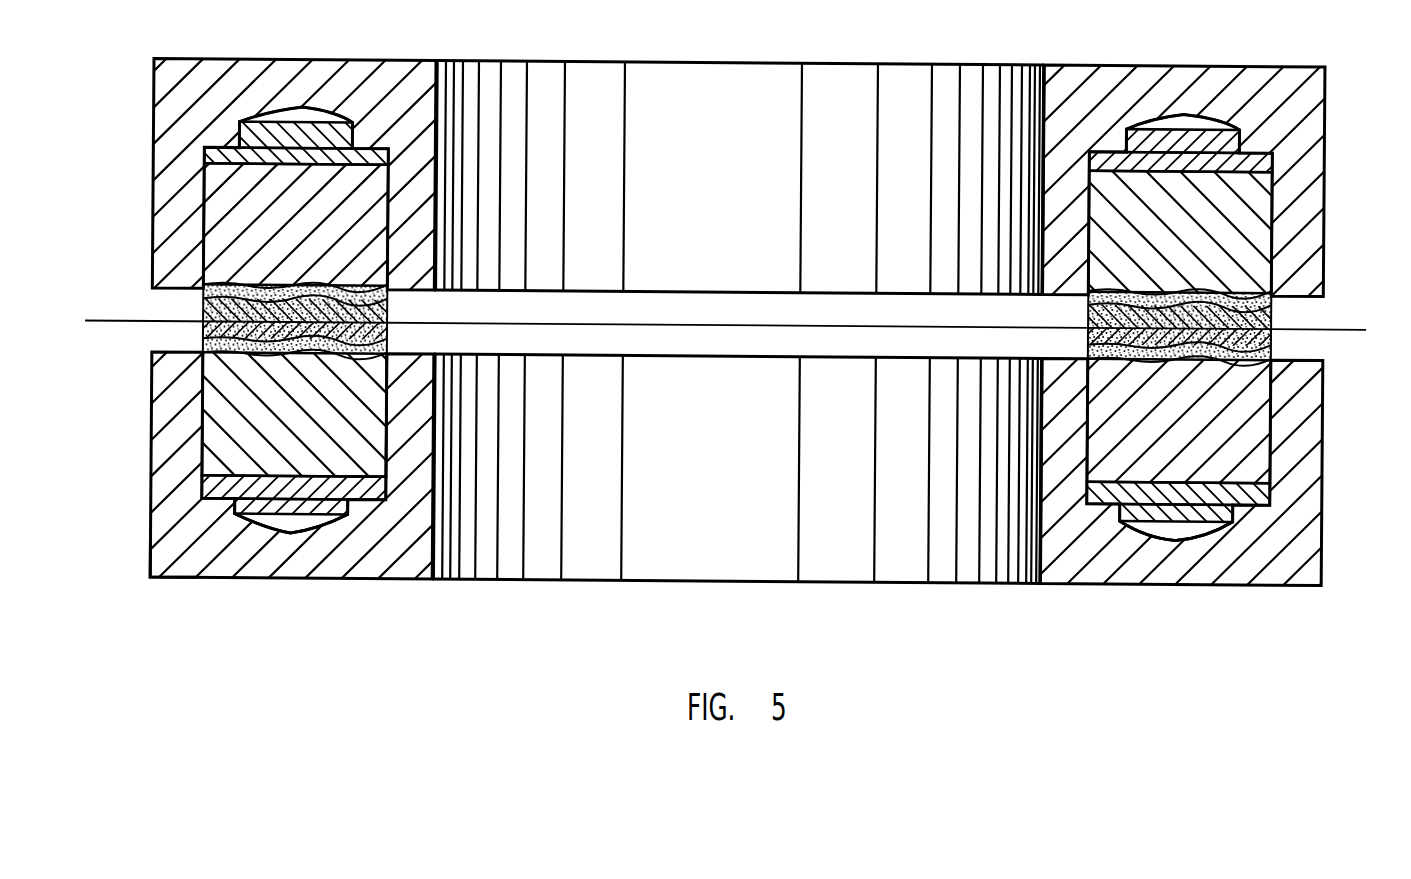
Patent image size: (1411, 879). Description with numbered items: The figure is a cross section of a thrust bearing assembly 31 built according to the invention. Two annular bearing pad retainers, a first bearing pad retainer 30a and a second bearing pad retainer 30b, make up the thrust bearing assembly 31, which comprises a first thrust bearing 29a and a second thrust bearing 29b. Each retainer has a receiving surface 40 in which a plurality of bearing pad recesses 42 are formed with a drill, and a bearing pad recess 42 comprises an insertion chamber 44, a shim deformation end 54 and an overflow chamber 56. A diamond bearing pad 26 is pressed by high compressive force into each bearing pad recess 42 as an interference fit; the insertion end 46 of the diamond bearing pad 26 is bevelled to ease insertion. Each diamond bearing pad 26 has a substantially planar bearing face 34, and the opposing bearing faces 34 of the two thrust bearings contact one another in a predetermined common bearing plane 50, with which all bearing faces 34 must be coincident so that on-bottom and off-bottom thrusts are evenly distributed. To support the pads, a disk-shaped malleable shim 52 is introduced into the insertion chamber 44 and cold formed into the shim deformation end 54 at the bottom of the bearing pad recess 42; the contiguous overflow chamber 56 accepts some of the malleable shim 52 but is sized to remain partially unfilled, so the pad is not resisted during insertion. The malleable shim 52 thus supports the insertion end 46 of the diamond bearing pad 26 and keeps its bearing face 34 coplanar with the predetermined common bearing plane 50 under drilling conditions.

The diamond bearing pad 26 is at (250, 232).
The first thrust bearing 29a is at (705, 177).
The second thrust bearing 29b is at (705, 466).
The first bearing pad retainer 30a is at (172, 100).
The second bearing pad retainer 30b is at (160, 527).
The thrust bearing assembly 31 is at (82, 637).
The bearing face 34 is at (392, 328).
The receiving surface 40 is at (168, 292).
The bearing pad recess 42 is at (1327, 387).
The insertion chamber 44 is at (435, 470).
The insertion end 46 is at (387, 433).
The predetermined common bearing plane 50 is at (134, 318).
The malleable shim 52 is at (240, 512).
The shim deformation end 54 is at (149, 565).
The overflow chamber 56 is at (1158, 540).